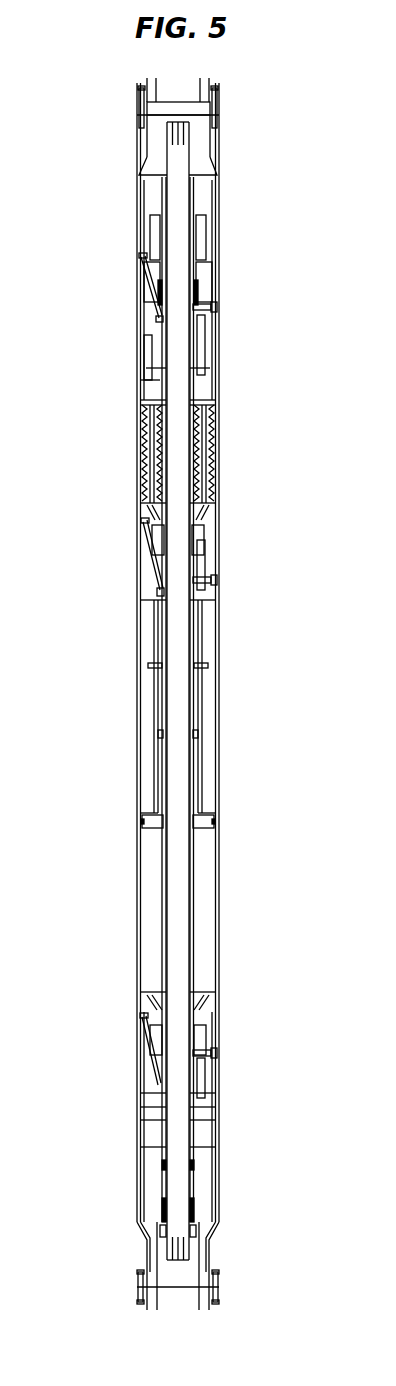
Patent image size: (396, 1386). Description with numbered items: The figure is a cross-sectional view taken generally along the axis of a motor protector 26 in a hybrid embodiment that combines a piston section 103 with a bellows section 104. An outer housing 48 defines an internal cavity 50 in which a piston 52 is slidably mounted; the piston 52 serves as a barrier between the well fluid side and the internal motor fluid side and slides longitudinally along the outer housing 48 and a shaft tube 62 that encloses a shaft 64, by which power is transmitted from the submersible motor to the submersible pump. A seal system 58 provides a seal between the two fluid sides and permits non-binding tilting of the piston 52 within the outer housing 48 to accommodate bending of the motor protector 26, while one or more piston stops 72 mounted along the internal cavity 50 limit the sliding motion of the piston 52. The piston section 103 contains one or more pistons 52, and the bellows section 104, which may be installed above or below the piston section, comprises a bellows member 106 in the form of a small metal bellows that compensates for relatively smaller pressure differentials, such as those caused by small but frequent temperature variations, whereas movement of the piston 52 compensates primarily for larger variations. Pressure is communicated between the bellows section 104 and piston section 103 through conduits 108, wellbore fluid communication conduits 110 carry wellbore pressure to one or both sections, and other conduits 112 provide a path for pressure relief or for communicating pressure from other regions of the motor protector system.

The motor protector 26 is at (106, 165).
The outer housing 48 is at (222, 868).
The internal cavity 50 is at (208, 702).
The piston 52 is at (200, 793).
The seal system 58 is at (157, 738).
The shaft tube 62 is at (200, 927).
The shaft 64 is at (200, 965).
The piston stop 72 is at (147, 664).
The piston section 103 is at (236, 752).
The bellows section 104 is at (236, 442).
The bellows member 106 is at (220, 467).
The conduits 108 is at (150, 562).
The wellbore fluid communication conduits 110 is at (137, 288).
The conduits 112 is at (210, 307).